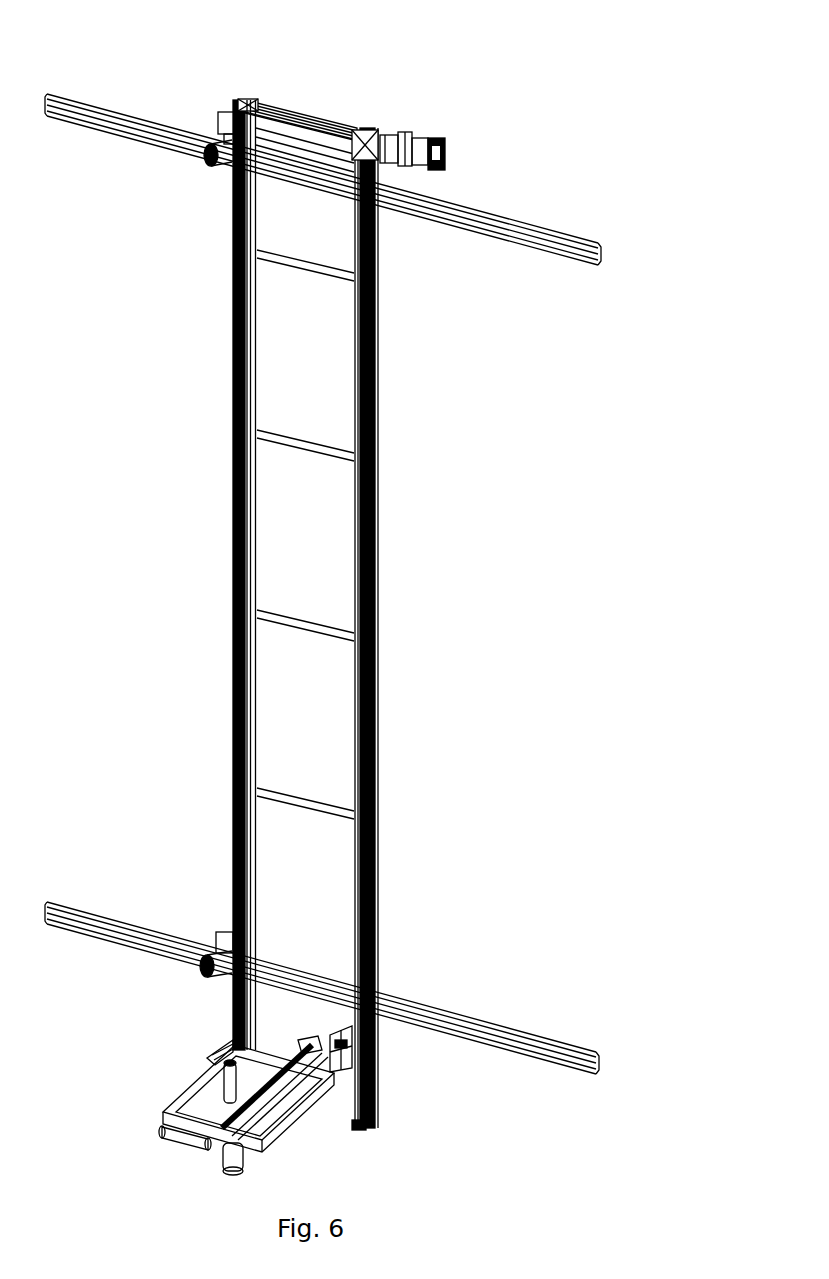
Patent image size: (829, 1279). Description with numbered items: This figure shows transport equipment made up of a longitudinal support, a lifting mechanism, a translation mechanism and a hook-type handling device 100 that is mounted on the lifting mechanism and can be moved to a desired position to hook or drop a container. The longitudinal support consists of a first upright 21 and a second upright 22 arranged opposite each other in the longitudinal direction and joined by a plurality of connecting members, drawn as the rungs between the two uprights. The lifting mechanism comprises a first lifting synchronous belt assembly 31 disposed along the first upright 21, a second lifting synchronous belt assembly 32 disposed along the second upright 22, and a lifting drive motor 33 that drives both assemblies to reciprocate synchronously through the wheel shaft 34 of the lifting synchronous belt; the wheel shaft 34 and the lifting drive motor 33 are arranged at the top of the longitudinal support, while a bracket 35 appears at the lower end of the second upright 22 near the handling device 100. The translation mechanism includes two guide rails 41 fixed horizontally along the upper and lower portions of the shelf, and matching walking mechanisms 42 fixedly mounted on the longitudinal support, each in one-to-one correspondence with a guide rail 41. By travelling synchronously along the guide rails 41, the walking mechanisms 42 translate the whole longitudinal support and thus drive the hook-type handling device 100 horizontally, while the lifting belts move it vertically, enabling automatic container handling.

The hook-type handling device 100 is at (211, 1095).
The first upright 21 is at (172, 574).
The second upright 22 is at (426, 629).
The first lifting synchronous belt assembly 31 is at (174, 575).
The second lifting synchronous belt assembly 32 is at (424, 644).
The lifting drive motor 33 is at (447, 90).
The wheel shaft of the lifting synchronous belt 34 is at (293, 91).
The bottom connecting bracket 35 is at (418, 1075).
The guide rail 41 is at (309, 542).
The walking mechanism 42 is at (170, 493).